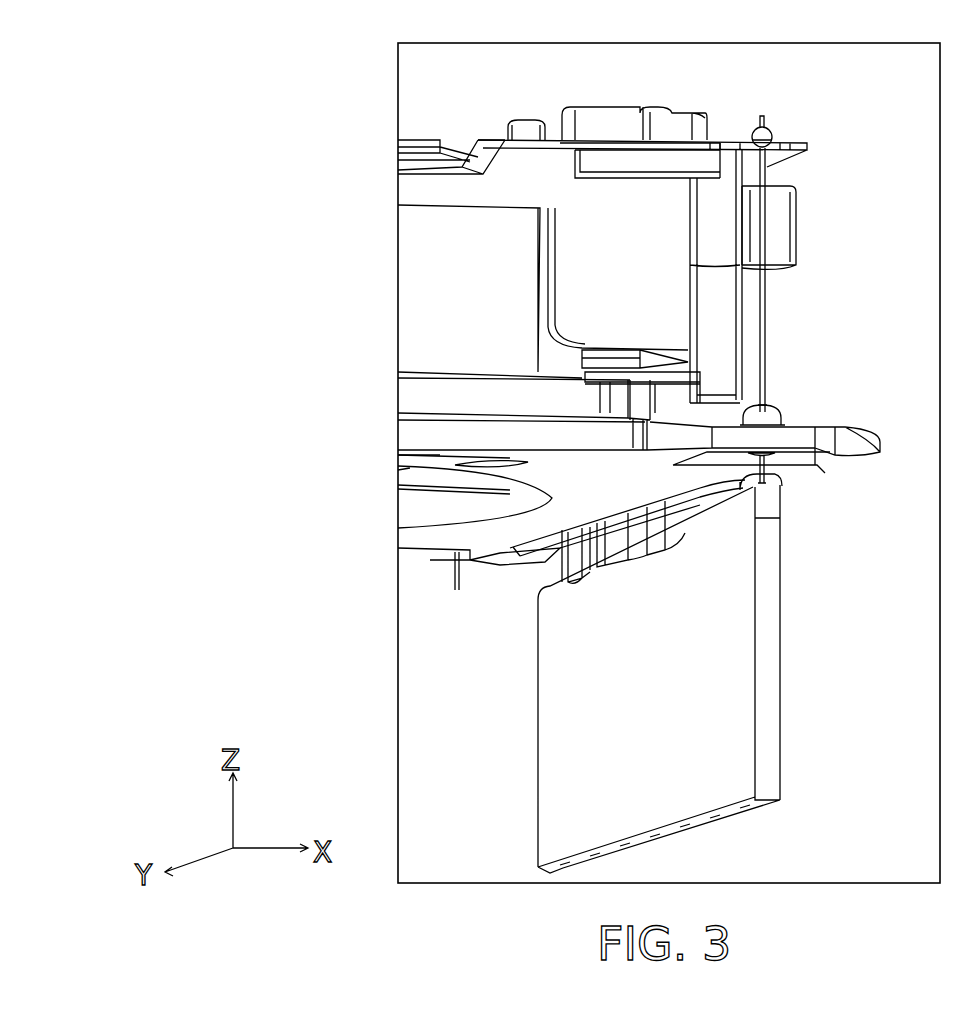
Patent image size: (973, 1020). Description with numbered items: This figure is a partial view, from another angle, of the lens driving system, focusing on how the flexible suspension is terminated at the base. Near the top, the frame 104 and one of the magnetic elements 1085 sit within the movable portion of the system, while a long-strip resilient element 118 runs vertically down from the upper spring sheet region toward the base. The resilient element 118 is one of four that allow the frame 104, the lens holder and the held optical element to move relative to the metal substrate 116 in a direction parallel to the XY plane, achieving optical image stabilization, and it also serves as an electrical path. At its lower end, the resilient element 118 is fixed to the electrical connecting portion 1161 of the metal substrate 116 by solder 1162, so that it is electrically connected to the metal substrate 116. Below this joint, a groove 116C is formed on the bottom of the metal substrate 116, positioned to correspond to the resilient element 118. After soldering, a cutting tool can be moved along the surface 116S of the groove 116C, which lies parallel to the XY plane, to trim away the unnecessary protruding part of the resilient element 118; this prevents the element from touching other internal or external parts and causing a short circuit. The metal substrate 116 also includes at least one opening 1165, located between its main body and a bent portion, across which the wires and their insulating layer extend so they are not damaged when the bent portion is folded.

The magnetic element 1085 is at (438, 286).
The frame 104 is at (778, 211).
The resilient element 118 is at (762, 240).
The electrical connecting portion 1161 is at (770, 141).
The solder 1162 is at (770, 414).
The metal substrate 116 is at (493, 536).
The surface 116S is at (822, 453).
The groove 116C is at (793, 468).
The opening 1165 is at (631, 561).